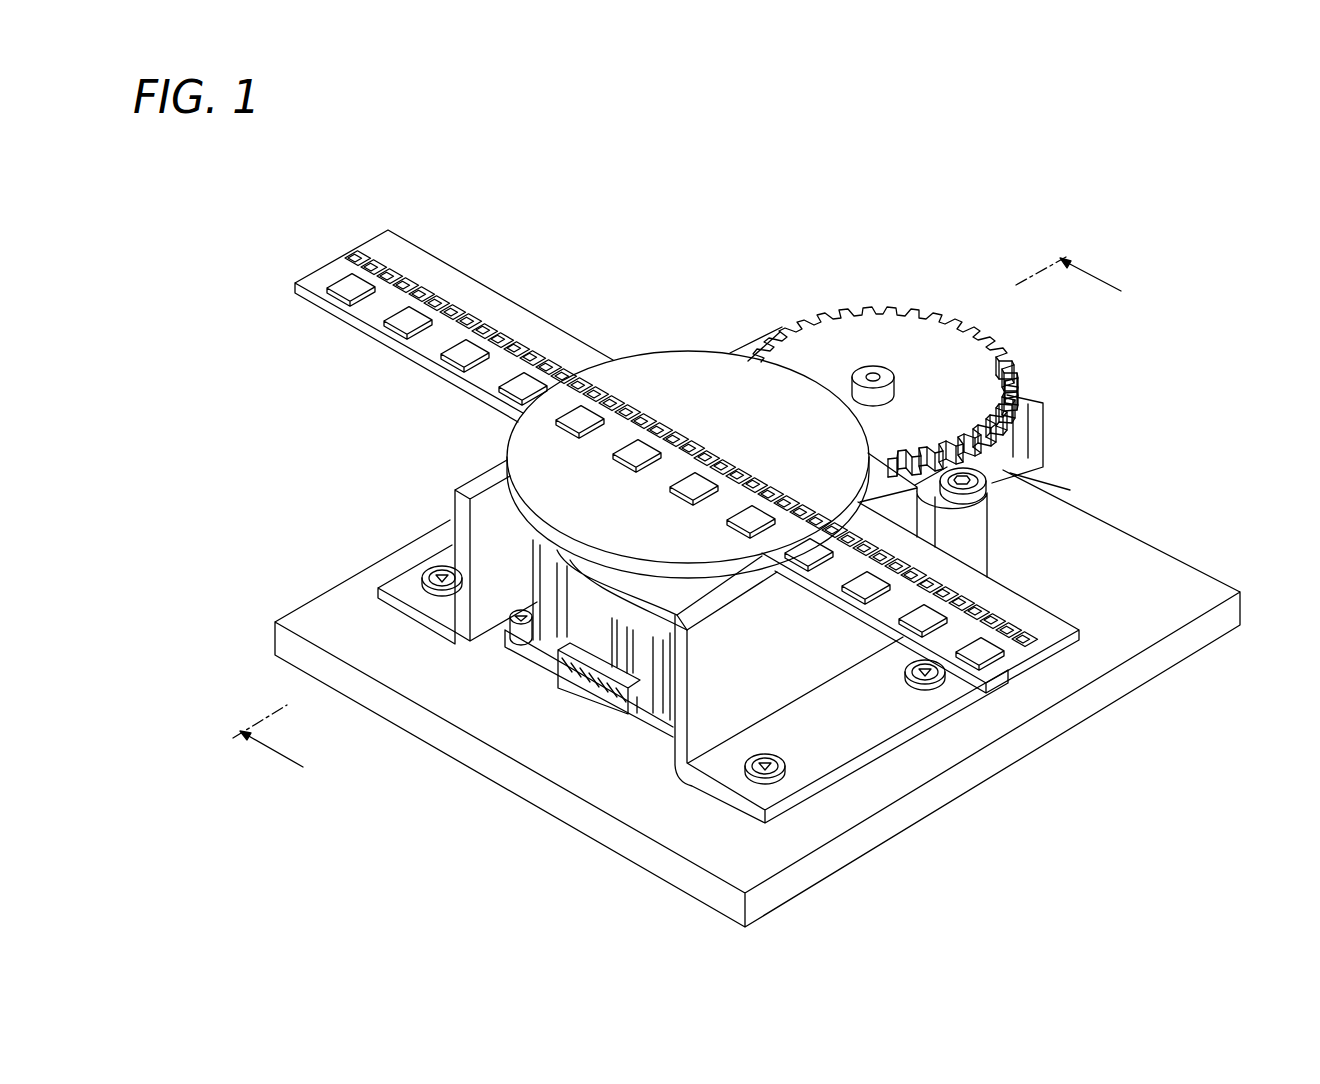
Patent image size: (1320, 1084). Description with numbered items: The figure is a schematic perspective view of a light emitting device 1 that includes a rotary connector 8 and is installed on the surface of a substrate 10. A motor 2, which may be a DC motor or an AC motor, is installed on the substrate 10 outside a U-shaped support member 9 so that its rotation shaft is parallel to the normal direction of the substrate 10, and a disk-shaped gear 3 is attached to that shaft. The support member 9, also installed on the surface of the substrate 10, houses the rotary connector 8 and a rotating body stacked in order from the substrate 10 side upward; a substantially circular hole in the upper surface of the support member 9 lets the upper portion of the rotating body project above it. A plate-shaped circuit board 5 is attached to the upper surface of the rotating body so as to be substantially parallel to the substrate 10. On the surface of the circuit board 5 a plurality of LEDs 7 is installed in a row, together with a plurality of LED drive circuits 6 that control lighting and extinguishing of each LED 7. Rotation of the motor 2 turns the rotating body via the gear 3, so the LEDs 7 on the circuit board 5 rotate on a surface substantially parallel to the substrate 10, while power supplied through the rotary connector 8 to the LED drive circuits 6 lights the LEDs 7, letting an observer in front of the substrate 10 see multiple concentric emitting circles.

The light emitting device 1 is at (1220, 846).
The motor 2 is at (1005, 471).
The gear 3 is at (991, 352).
The circuit board 5 is at (458, 290).
The LED drive circuits 6 is at (990, 653).
The LEDs 7 is at (990, 620).
The rotary connector 8 is at (593, 637).
The support member 9 is at (830, 740).
The substrate 10 is at (1197, 637).